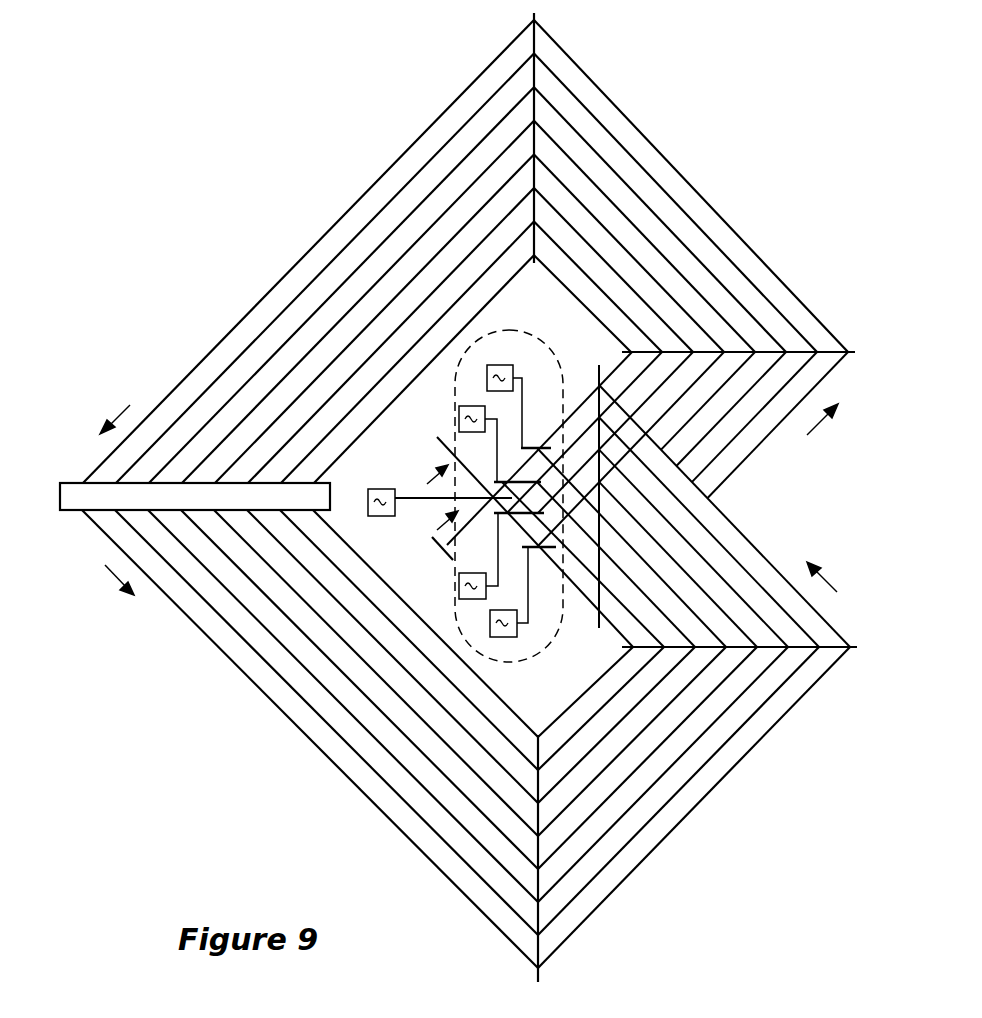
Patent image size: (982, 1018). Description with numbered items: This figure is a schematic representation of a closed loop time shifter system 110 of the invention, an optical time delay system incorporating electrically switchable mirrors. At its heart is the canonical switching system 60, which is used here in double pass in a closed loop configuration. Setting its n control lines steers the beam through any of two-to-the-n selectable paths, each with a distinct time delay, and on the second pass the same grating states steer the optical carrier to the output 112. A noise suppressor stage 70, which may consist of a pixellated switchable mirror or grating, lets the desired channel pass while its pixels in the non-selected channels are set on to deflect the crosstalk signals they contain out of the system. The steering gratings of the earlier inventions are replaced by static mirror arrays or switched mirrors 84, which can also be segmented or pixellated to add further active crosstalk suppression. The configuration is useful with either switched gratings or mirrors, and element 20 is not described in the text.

The closed loop time shifter system 110 is at (466, 494).
The switched mirrors 84 is at (535, 14).
The noise suppressor stage 70 is at (73, 483).
The canonical switching system 60 is at (552, 654).
The output 112 is at (446, 444).
The mirror 20 is at (438, 534).